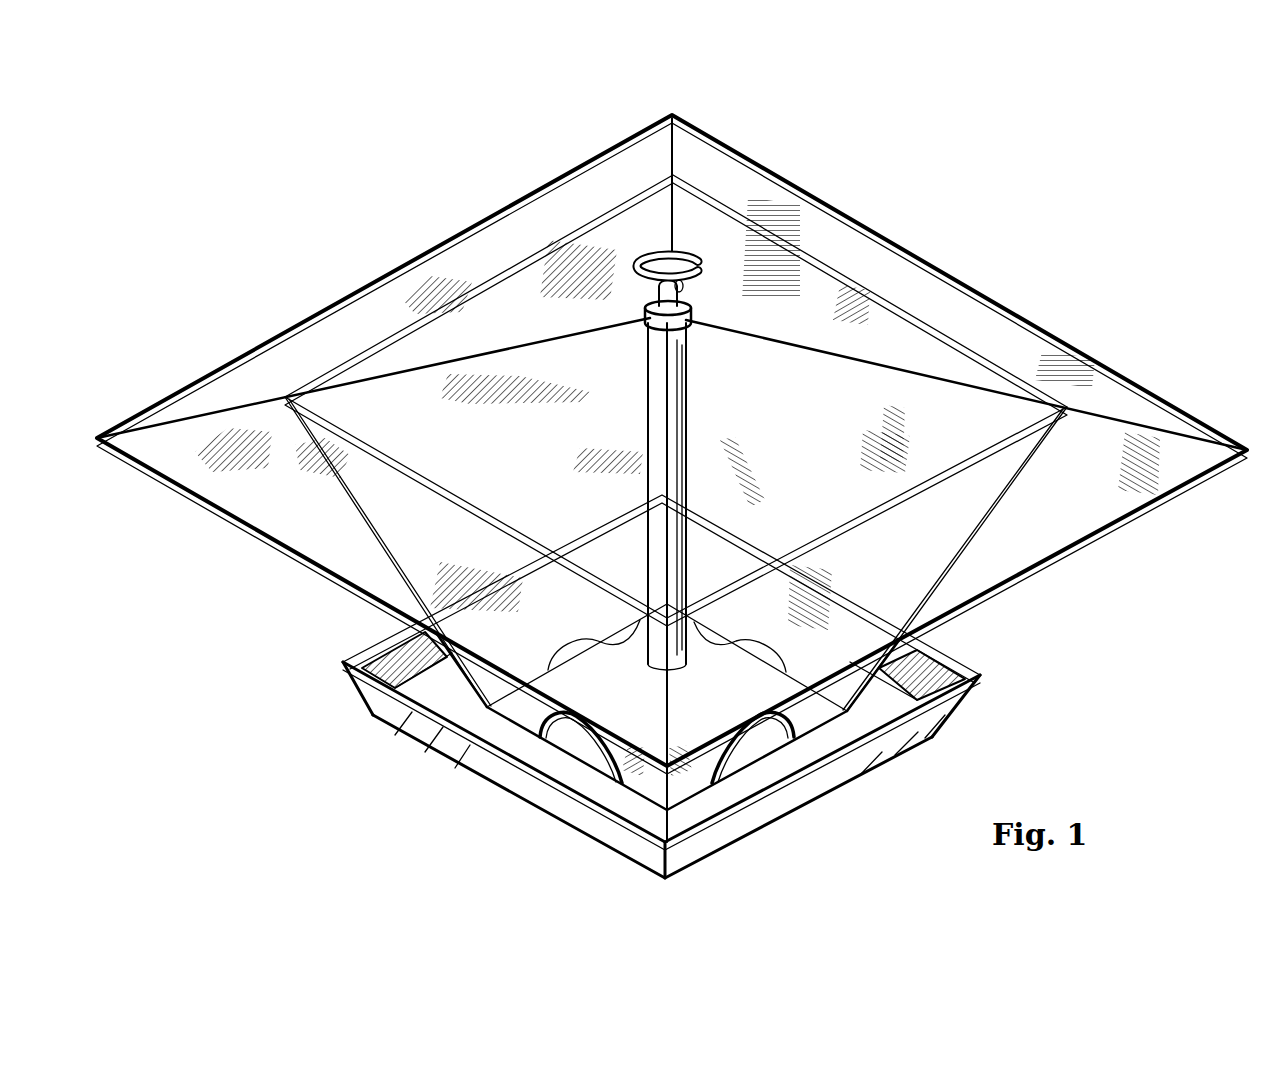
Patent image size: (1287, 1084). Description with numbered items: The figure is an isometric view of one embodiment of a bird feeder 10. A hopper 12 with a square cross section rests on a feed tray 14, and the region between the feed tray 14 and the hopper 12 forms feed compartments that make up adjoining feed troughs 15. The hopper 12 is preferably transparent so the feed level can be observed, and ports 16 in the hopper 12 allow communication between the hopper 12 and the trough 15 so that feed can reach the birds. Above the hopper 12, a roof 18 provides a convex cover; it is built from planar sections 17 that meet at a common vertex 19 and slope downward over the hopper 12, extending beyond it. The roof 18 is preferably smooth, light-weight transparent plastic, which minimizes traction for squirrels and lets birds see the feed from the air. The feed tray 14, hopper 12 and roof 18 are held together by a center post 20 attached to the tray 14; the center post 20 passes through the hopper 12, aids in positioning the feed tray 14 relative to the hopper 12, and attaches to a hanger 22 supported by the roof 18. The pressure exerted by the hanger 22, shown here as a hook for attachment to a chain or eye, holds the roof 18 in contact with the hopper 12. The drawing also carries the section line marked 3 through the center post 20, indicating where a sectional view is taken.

The bird feeder 10 is at (290, 232).
The hopper 12 is at (515, 722).
The feed tray 14 is at (970, 718).
The feed trough 15 is at (443, 700).
The ports 16 is at (586, 738).
The planar sections 17 is at (345, 330).
The roof 18 is at (1026, 306).
The common vertex 19 is at (708, 348).
The center post 20 is at (647, 402).
The hanger 22 is at (640, 262).
The section line 3- 3 is at (687, 303).